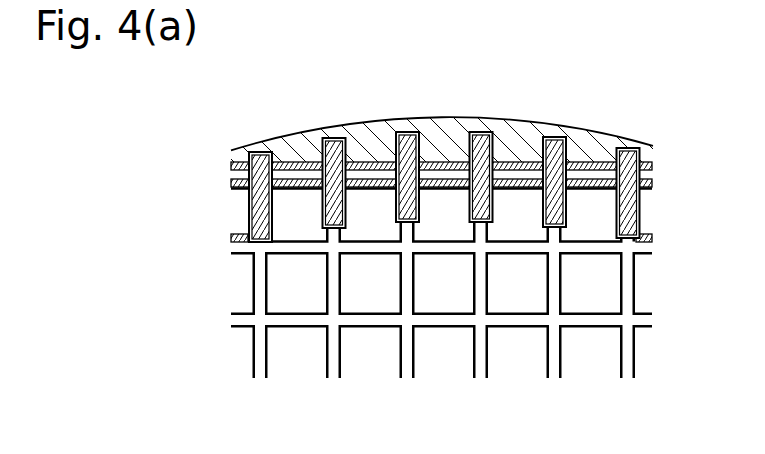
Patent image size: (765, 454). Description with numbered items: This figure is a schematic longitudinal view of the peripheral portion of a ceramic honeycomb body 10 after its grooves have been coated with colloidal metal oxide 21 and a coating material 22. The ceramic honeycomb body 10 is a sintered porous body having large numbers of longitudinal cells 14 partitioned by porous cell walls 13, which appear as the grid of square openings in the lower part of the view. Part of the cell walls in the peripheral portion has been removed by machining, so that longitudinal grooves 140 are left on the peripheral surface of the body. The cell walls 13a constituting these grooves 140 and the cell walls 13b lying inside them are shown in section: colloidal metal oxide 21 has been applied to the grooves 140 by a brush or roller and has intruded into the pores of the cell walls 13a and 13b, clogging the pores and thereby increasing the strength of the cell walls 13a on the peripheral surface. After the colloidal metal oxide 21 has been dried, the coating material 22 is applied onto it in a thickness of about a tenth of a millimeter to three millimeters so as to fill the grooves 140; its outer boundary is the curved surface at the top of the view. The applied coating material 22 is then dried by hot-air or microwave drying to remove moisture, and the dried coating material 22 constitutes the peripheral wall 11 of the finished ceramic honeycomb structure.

The ceramic honeycomb body 10 is at (222, 315).
The peripheral wall 11 is at (442, 139).
The cell walls 13 is at (517, 318).
The cell walls constituting the grooves 13a is at (548, 138).
The cell walls inside the cell walls 13a 13b is at (573, 193).
The longitudinal cells 14 is at (372, 287).
The colloidal metal oxide 21 is at (405, 132).
The coating material 22 is at (463, 125).
The longitudinal grooves 140 is at (367, 150).